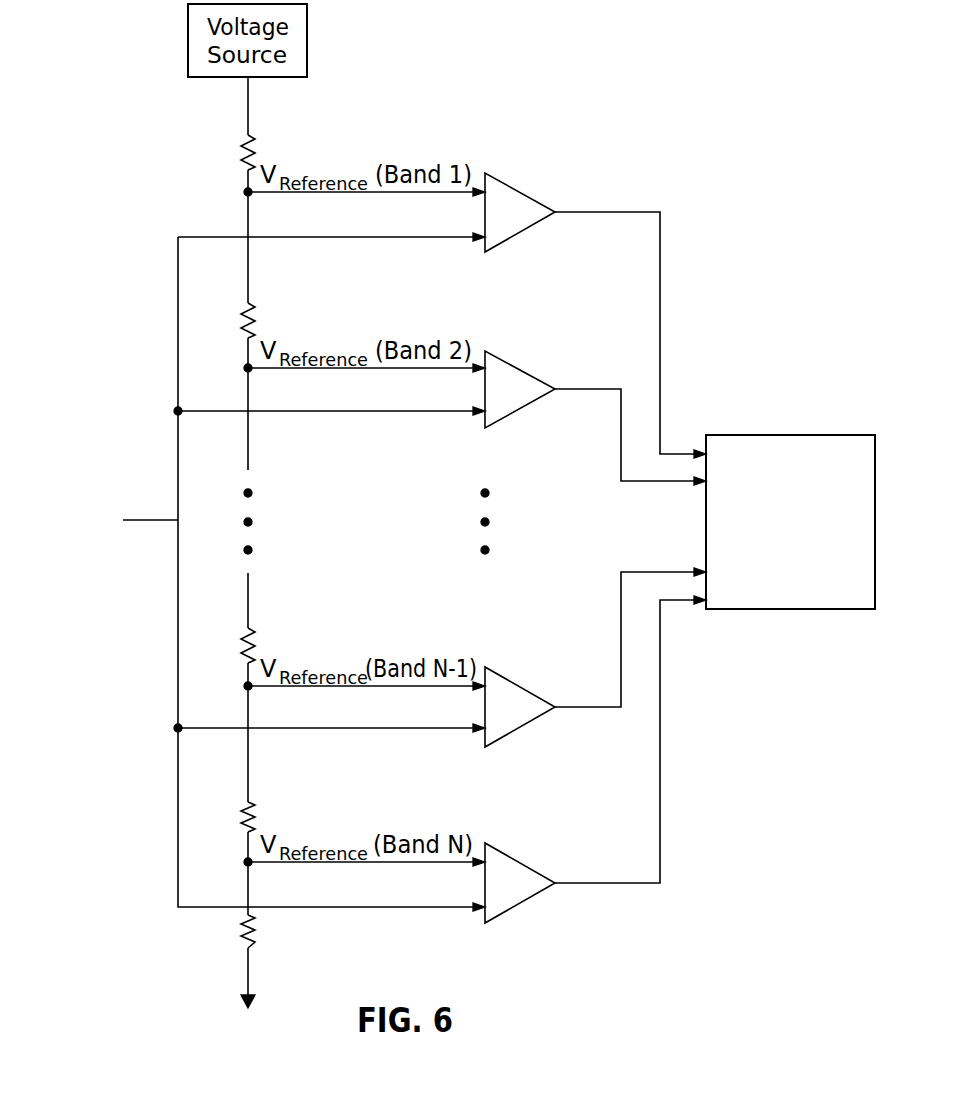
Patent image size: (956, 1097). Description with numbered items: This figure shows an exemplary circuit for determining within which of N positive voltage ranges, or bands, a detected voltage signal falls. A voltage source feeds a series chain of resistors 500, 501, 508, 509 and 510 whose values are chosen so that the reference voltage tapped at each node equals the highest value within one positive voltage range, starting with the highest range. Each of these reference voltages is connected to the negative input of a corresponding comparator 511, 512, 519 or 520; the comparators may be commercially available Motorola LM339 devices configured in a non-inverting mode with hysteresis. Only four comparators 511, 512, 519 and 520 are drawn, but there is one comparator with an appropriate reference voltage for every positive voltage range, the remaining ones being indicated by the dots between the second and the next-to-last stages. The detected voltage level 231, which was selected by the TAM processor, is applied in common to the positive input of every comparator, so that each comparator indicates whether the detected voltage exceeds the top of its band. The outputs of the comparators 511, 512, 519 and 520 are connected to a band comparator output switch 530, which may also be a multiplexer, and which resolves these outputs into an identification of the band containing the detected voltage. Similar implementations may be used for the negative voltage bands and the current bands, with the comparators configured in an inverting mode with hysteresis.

The resistor 500 is at (258, 146).
The resistor 501 is at (258, 318).
The resistor 508 is at (258, 643).
The resistor 509 is at (258, 813).
The resistor 510 is at (258, 933).
The comparator 511 is at (529, 198).
The comparator 512 is at (529, 376).
The comparator 519 is at (529, 693).
The comparator 520 is at (529, 869).
The band comparator output switch 530 is at (791, 435).
The detected voltage level 231 is at (155, 520).